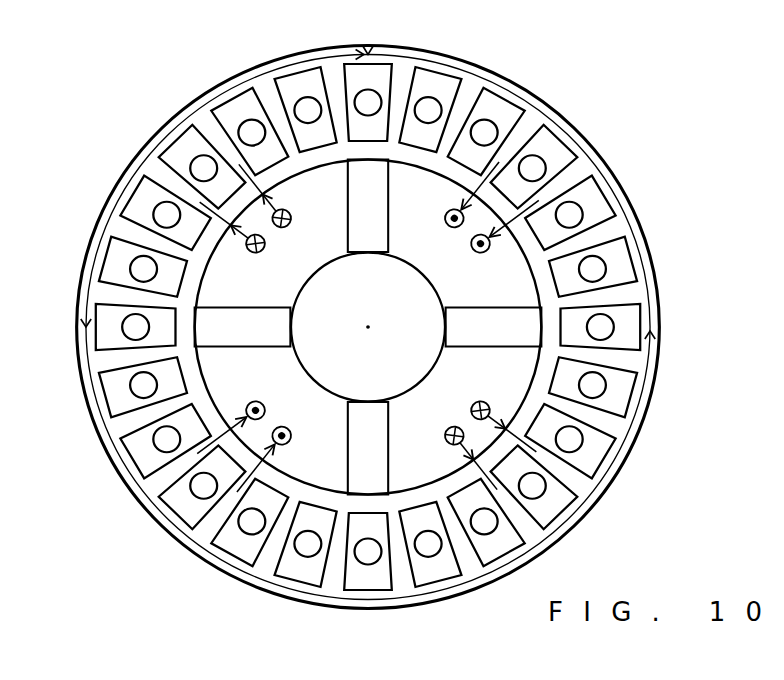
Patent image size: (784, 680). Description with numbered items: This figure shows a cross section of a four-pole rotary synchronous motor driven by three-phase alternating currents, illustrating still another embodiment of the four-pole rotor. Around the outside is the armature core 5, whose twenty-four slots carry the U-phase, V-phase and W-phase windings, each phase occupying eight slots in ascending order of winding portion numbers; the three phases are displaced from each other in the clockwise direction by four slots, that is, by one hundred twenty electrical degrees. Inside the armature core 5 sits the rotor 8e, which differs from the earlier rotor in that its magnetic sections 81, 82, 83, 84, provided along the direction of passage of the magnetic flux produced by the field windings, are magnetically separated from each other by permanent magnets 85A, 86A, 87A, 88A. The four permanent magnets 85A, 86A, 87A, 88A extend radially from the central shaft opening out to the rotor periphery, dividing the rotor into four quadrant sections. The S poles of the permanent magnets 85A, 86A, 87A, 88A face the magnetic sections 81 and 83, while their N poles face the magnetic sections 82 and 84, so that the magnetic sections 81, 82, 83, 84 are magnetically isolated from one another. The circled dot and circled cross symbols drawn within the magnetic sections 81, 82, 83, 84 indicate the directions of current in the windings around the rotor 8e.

The armature core 5 is at (543, 122).
The rotor 8e is at (549, 304).
The magnetic section 81 is at (482, 268).
The magnetic section 82 is at (505, 382).
The magnetic section 83 is at (232, 382).
The magnetic section 84 is at (207, 257).
The permanent magnet 85A is at (369, 176).
The permanent magnet 86A is at (525, 327).
The permanent magnet 87A is at (370, 480).
The permanent magnet 88A is at (210, 328).